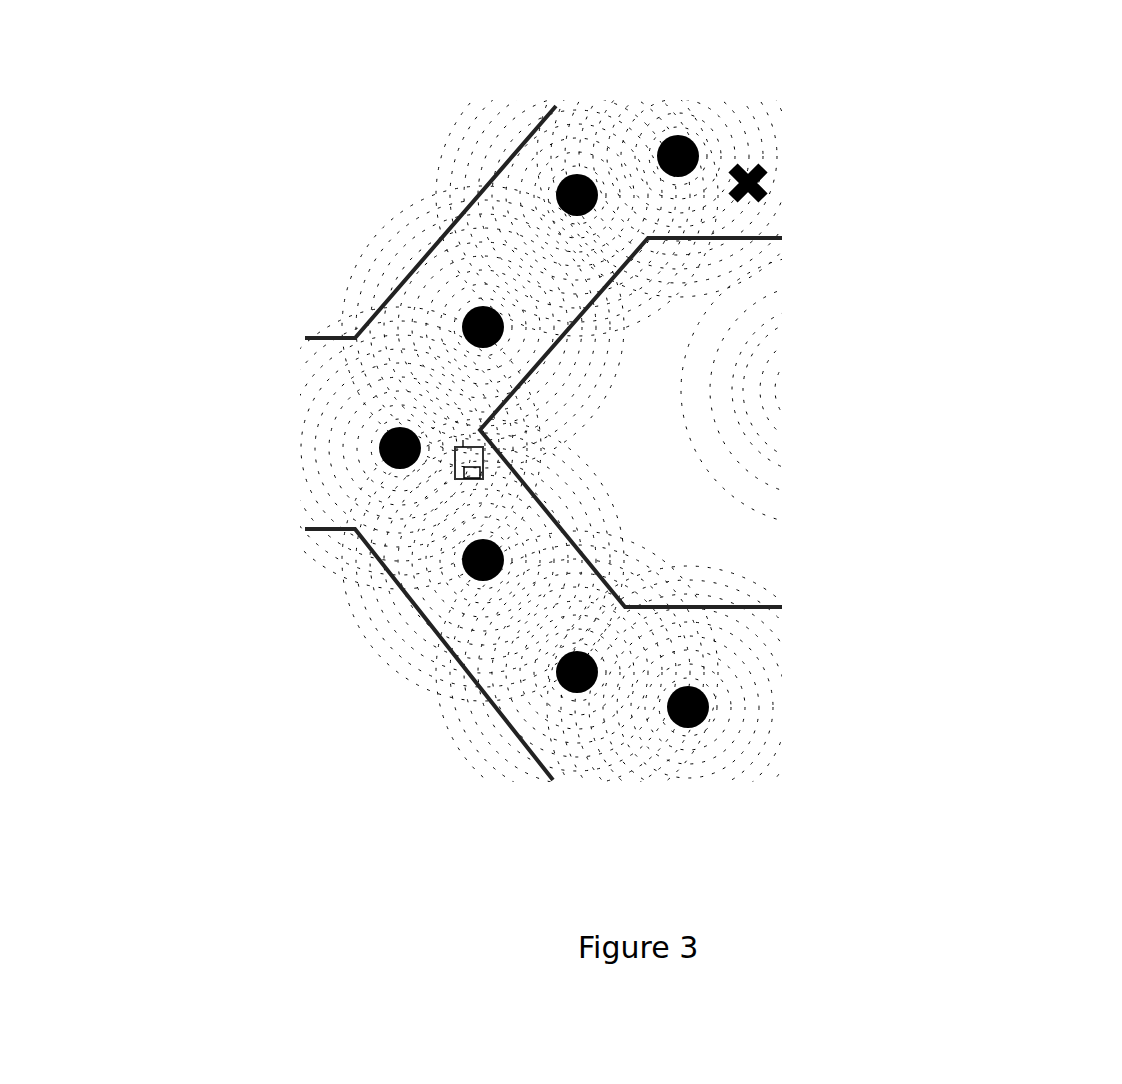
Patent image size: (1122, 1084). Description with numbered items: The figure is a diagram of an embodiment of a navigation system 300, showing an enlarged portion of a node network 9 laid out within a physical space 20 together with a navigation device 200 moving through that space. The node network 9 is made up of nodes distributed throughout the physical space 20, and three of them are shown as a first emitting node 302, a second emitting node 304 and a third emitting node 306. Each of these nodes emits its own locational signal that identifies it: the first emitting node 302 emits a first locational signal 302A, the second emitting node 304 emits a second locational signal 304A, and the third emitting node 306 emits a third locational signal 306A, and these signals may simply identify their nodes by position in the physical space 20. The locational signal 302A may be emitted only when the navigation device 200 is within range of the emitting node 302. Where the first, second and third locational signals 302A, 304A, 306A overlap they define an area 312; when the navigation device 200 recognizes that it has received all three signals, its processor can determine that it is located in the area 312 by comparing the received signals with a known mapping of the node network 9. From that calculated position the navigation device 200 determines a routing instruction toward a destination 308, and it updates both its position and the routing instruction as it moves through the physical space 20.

The navigation system 300 is at (840, 722).
The physical space 20 is at (742, 103).
The destination 308 is at (772, 195).
The first emitting node 302 is at (460, 328).
The first locational signal 302A is at (450, 372).
The second emitting node 304 is at (378, 447).
The second locational signal 304A is at (397, 491).
The third emitting node 306 is at (467, 575).
The third locational signal 306A is at (452, 620).
The node network 9 is at (488, 722).
The area 312 is at (521, 447).
The navigation device 200 is at (500, 458).